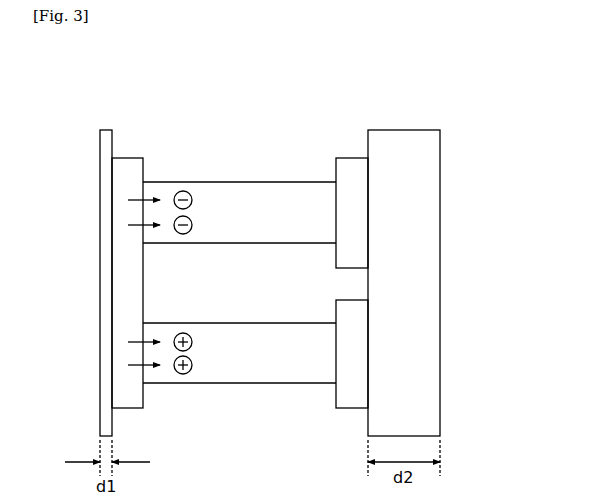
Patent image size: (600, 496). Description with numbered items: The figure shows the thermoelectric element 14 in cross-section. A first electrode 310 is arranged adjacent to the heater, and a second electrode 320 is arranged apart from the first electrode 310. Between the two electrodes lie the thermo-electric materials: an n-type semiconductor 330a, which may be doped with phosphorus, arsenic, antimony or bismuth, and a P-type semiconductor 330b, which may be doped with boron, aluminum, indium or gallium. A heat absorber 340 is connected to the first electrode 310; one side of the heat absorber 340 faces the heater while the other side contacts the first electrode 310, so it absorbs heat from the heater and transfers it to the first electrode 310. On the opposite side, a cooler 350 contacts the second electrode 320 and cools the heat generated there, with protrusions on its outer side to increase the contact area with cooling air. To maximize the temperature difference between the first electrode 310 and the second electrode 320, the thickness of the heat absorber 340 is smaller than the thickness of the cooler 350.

The thermoelectric element 14 is at (68, 50).
The first electrode 310 is at (128, 157).
The second electrode 320 is at (352, 157).
The n-type semiconductor 330a is at (240, 182).
The P-type semiconductor 330b is at (240, 383).
The heat absorber 340 is at (100, 284).
The cooler 350 is at (440, 284).